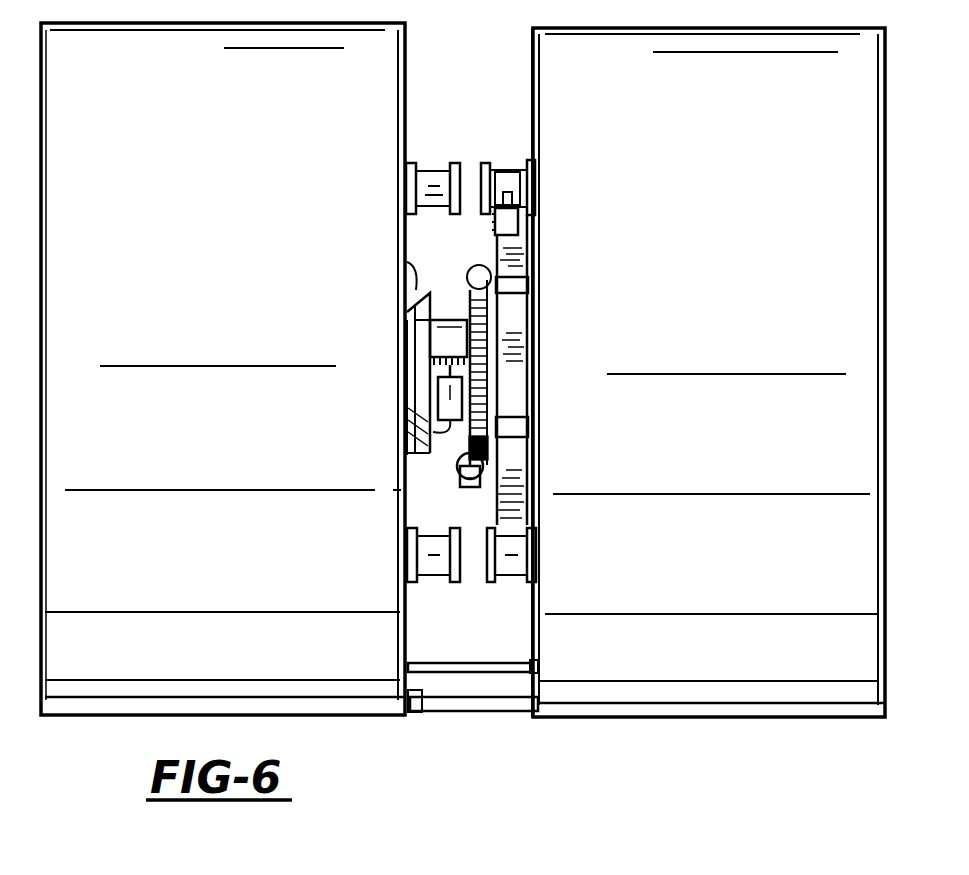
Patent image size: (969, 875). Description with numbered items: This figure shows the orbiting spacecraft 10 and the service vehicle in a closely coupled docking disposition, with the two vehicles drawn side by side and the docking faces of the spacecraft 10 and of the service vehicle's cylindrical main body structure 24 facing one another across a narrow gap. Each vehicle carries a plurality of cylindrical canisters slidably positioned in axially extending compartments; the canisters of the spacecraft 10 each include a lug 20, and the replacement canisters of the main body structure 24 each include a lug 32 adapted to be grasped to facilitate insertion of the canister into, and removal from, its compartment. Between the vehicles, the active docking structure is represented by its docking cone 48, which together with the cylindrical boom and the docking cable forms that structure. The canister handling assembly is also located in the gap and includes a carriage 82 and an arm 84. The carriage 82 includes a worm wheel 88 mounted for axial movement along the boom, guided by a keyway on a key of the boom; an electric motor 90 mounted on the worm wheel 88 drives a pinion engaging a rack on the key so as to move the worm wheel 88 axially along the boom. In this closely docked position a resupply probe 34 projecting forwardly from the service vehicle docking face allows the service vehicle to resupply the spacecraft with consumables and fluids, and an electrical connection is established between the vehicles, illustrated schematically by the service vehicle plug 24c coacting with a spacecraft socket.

The orbiting spacecraft 10 is at (253, 254).
The main body structure 24 is at (720, 254).
The service vehicle plug 24c is at (470, 712).
The lug 20 is at (433, 170).
The lug 32 is at (508, 582).
The resupply probe 34 is at (452, 668).
The docking cone 48 is at (412, 276).
The carriage 82 is at (463, 488).
The arm 84 is at (540, 498).
The worm wheel 88 is at (468, 297).
The electric motor 90 is at (438, 405).